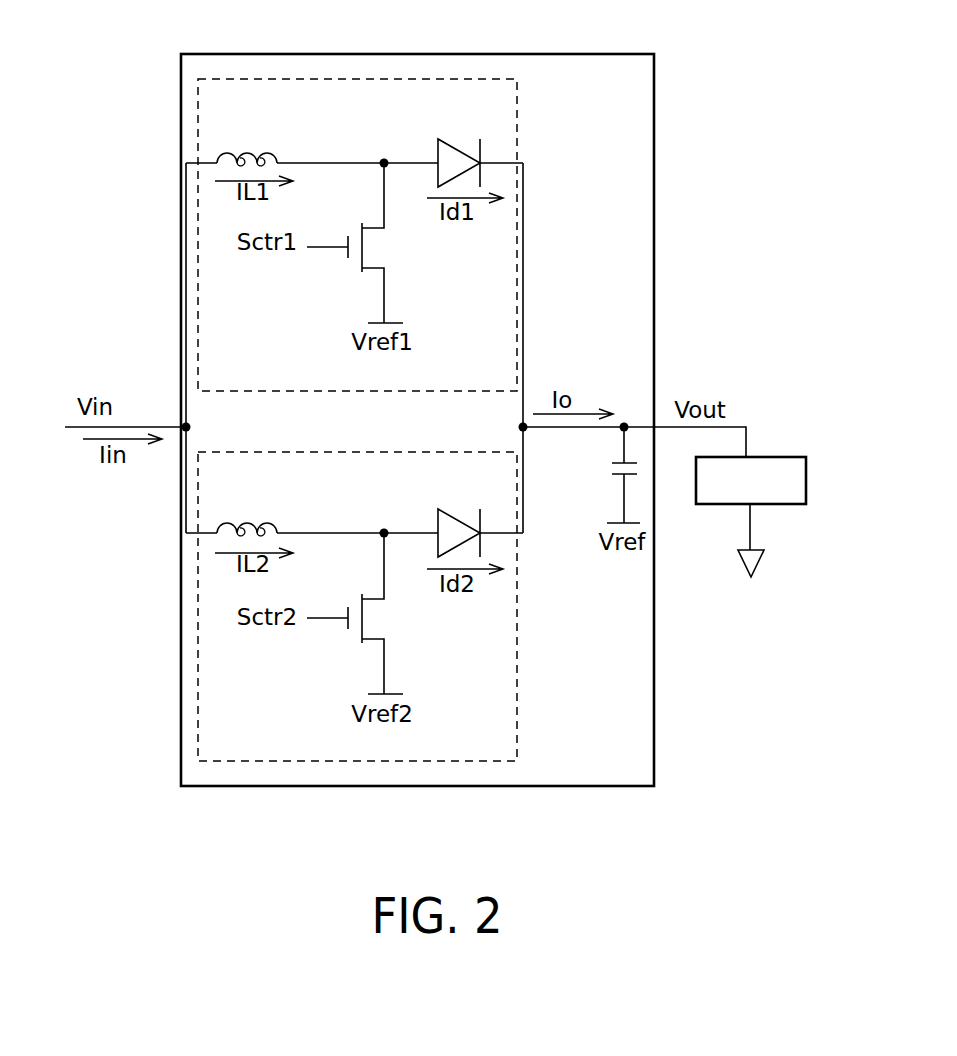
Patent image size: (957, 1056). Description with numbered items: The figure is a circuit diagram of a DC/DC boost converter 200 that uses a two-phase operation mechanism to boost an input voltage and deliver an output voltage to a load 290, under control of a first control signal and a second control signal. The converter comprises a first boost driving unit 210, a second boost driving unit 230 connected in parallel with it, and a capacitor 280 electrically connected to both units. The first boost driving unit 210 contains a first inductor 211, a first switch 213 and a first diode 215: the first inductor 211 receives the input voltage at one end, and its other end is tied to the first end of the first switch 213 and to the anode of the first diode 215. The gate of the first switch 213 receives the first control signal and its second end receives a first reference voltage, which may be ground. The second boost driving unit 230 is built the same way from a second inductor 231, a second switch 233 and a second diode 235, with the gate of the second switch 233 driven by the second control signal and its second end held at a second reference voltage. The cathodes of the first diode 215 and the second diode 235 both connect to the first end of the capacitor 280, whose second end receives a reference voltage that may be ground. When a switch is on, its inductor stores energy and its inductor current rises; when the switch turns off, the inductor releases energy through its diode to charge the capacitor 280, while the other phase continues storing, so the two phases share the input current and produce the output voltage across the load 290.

The DC/DC boost converter 200 is at (415, 54).
The first boost driving unit 210 is at (517, 240).
The first inductor 211 is at (258, 153).
The first switch 213 is at (375, 249).
The first diode 215 is at (452, 139).
The second boost driving unit 230 is at (517, 612).
The second inductor 231 is at (258, 523).
The second switch 233 is at (375, 620).
The second diode 235 is at (452, 509).
The capacitor 280 is at (612, 470).
The load 290 is at (777, 456).